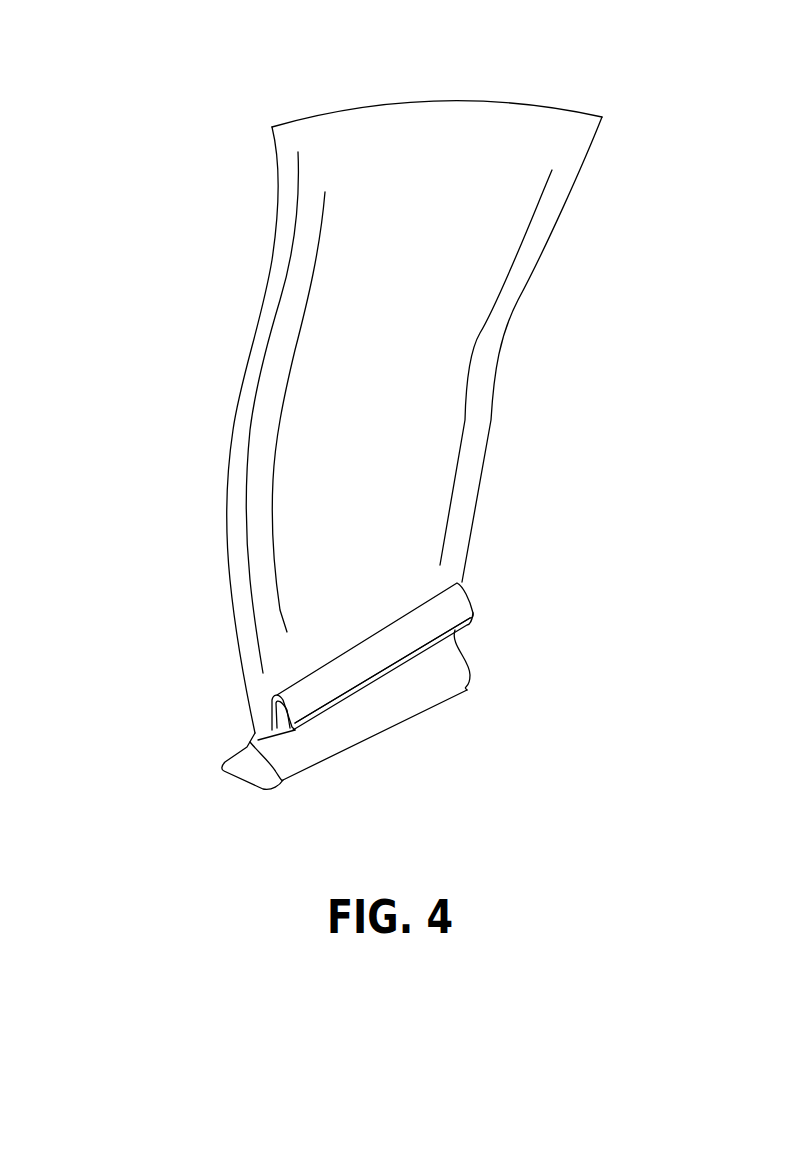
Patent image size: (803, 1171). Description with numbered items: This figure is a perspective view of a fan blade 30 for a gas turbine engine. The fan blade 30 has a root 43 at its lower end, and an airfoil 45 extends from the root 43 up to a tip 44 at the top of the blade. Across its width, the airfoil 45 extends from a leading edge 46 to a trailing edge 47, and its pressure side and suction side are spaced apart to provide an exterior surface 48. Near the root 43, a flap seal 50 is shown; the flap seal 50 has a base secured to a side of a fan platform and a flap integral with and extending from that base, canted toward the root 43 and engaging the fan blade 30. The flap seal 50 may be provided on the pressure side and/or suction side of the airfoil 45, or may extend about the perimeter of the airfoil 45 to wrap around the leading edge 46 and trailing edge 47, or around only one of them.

The fan blade 30 is at (228, 83).
The root 43 is at (237, 770).
The tip 44 is at (437, 100).
The airfoil 45 is at (483, 478).
The leading edge 46 is at (228, 525).
The trailing edge 47 is at (477, 530).
The exterior surface 48 is at (345, 308).
The flap seal 50 is at (365, 660).